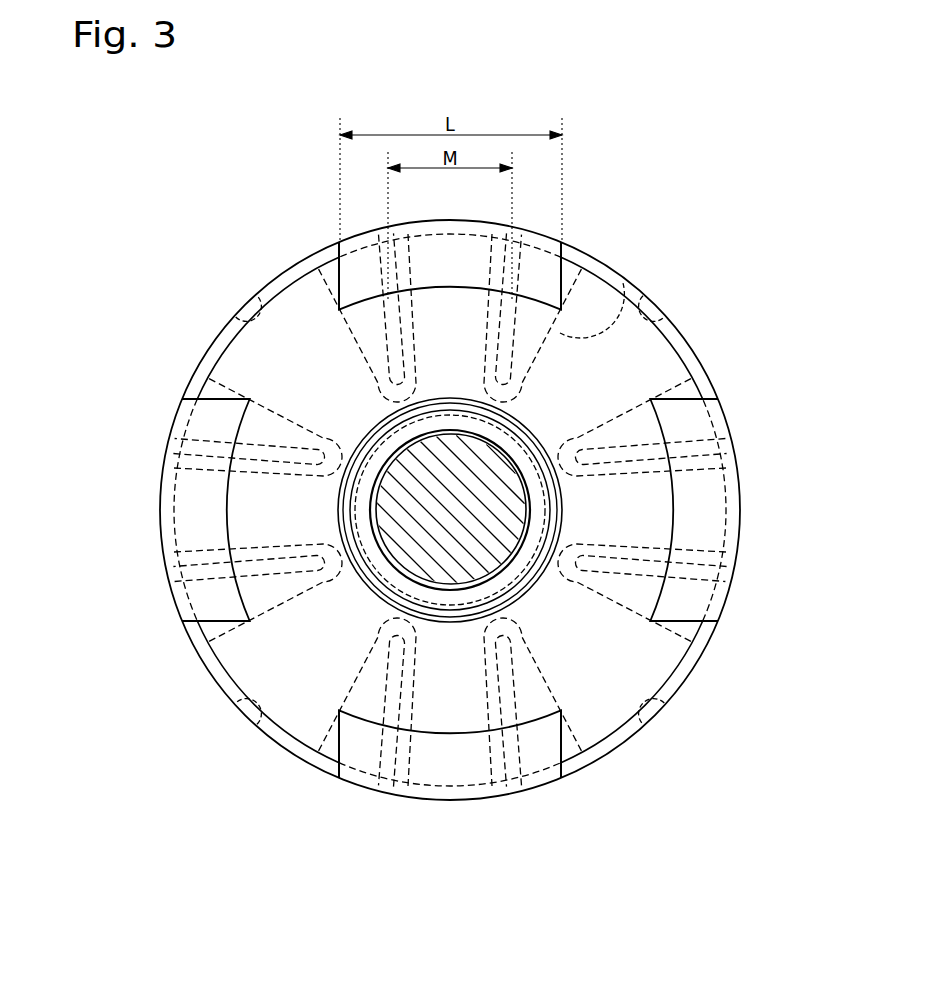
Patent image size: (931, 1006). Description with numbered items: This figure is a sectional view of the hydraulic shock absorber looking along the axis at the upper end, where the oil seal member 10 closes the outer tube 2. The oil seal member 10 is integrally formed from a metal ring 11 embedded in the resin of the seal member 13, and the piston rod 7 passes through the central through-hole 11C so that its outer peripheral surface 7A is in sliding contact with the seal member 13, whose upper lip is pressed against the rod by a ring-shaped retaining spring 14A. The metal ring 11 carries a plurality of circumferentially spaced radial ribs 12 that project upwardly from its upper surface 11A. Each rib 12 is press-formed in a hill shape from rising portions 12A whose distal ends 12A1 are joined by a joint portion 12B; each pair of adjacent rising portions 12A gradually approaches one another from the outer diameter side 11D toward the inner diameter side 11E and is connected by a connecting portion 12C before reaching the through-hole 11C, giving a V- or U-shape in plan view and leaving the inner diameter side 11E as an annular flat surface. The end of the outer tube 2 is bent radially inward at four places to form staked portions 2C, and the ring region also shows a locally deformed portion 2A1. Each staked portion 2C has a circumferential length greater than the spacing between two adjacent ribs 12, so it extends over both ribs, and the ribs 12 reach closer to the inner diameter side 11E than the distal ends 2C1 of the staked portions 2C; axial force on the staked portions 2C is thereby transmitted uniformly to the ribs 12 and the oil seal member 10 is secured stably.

The outer tube 2 is at (650, 710).
The housing notch 2A1 is at (247, 688).
The staked portion 2C is at (497, 252).
The distal end of staked portion 2C1 is at (338, 313).
The piston rod 7 is at (443, 520).
The outer peripheral surface of piston rod 7A is at (500, 567).
The oil seal member 10 is at (285, 368).
The metal ring 11 is at (182, 467).
The upper surface 11A is at (475, 700).
The through-hole 11C is at (517, 443).
The outer diameter side 11D is at (665, 353).
The inner diameter side 11E is at (380, 445).
The rib 12 is at (395, 268).
The rising portion 12A is at (607, 282).
The distal end of rising portion 12A1 is at (700, 580).
The joint portion 12B is at (340, 262).
The connecting portion 12C is at (385, 385).
The seal member 13 is at (610, 370).
The retaining spring 14A is at (340, 527).